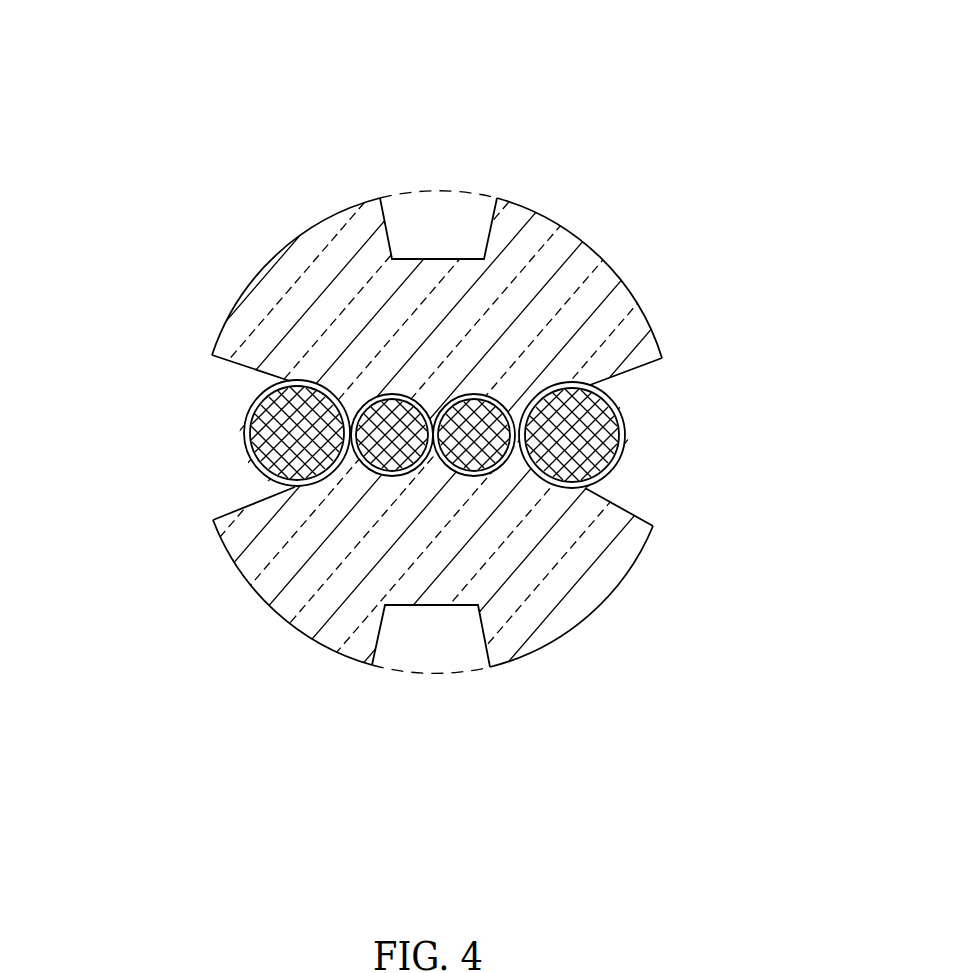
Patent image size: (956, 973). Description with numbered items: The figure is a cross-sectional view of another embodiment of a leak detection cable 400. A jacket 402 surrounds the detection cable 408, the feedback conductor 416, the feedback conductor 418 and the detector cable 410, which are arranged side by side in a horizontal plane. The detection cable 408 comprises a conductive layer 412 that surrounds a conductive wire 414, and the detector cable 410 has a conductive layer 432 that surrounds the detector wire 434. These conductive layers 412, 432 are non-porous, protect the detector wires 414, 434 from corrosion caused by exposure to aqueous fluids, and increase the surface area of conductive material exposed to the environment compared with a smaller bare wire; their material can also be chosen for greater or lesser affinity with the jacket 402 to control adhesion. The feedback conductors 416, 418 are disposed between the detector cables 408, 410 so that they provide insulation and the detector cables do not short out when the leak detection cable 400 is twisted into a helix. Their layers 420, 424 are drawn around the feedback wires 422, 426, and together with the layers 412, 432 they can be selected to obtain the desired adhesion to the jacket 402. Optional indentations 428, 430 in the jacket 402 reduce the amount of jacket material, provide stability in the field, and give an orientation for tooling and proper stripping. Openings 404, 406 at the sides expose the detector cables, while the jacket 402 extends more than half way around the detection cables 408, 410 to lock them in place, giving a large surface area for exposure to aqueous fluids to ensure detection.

The leak detection cable 400 is at (478, 424).
The jacket 402 is at (526, 208).
The opening 404 is at (661, 489).
The opening 406 is at (208, 500).
The detection cable 408 is at (673, 476).
The detector cable 410 is at (186, 407).
The conductive layer 412 is at (625, 431).
The conductive wire 414 is at (585, 465).
The feedback conductor 416 is at (596, 589).
The feedback conductor 418 is at (245, 596).
The insulating layer 420 is at (505, 475).
The feedback wire 422 is at (470, 450).
The insulating layer 424 is at (373, 475).
The feedback wire 426 is at (388, 455).
The indentation 428 is at (440, 203).
The indentation 430 is at (422, 657).
The conductive layer 432 is at (247, 432).
The detector wire 434 is at (277, 453).